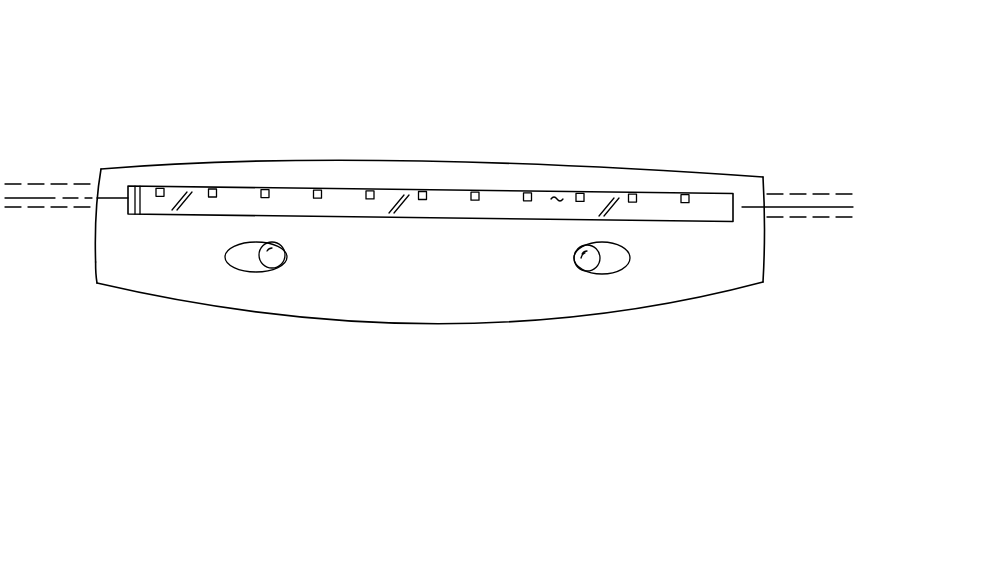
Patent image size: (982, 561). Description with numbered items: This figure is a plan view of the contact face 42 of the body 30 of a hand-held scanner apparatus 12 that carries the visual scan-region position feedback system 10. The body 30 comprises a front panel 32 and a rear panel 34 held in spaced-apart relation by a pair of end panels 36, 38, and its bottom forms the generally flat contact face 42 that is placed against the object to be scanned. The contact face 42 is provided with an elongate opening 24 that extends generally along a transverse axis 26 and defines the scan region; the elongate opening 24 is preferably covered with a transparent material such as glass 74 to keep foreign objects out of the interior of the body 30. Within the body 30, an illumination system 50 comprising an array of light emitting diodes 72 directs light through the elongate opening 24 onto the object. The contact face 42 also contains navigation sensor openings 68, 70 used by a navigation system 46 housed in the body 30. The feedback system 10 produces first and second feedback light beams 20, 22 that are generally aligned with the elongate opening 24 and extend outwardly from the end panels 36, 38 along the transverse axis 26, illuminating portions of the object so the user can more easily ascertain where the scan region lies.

The visual scan-region position feedback system 10 is at (122, 50).
The scanner apparatus 12 is at (290, 152).
The first feedback light beam 20 is at (790, 197).
The second feedback light beam 22 is at (67, 185).
The elongate opening 24 is at (380, 220).
The transverse axis 26 is at (833, 210).
The body 30 is at (97, 283).
The front panel 32 is at (523, 162).
The rear panel 34 is at (510, 323).
The end panel 36 is at (763, 273).
The end panel 38 is at (94, 235).
The contact face 42 is at (493, 282).
The navigation system 46 is at (224, 254).
The illumination system 50 is at (653, 200).
The navigation sensor opening 68 is at (597, 268).
The navigation sensor opening 70 is at (260, 273).
The light emitting diodes 72 is at (317, 193).
The glass 74 is at (558, 194).